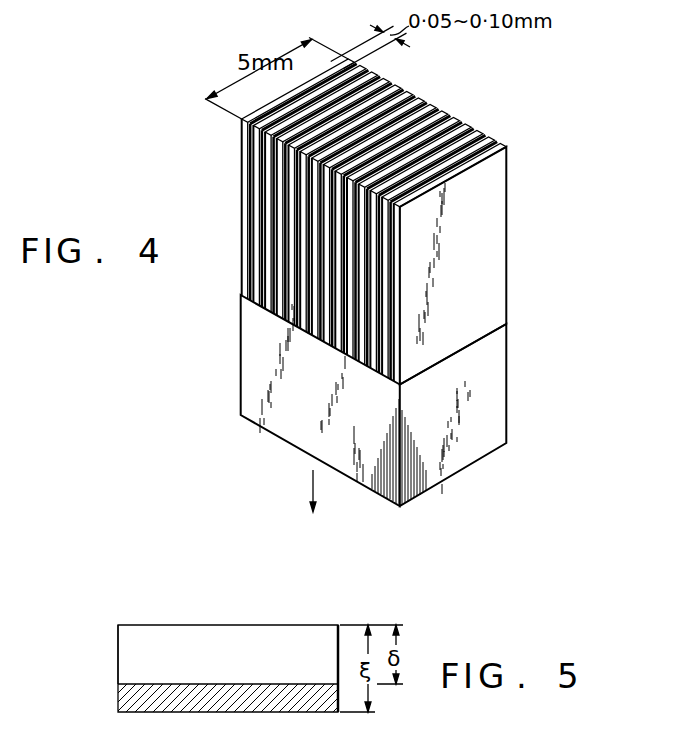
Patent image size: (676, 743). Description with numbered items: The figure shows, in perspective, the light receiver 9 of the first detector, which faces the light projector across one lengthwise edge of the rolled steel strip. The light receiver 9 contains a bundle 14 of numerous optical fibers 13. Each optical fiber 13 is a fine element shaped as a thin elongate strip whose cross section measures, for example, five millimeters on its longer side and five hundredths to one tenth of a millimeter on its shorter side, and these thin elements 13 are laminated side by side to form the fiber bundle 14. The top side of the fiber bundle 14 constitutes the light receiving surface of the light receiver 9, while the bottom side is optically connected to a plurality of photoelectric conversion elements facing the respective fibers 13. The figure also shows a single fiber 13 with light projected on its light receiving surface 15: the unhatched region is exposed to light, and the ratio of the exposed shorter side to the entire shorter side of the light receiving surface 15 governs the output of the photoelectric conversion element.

In FIG. 4, the optical fiber 13 is at (505, 204).
In FIG. 5, the optical fiber 13 is at (205, 622).
In FIG. 4, the fiber bundle 14 is at (393, 222).
In FIG. 4, the light receiver 9 is at (483, 387).
In FIG. 5, the light receiving surface 15 is at (124, 652).